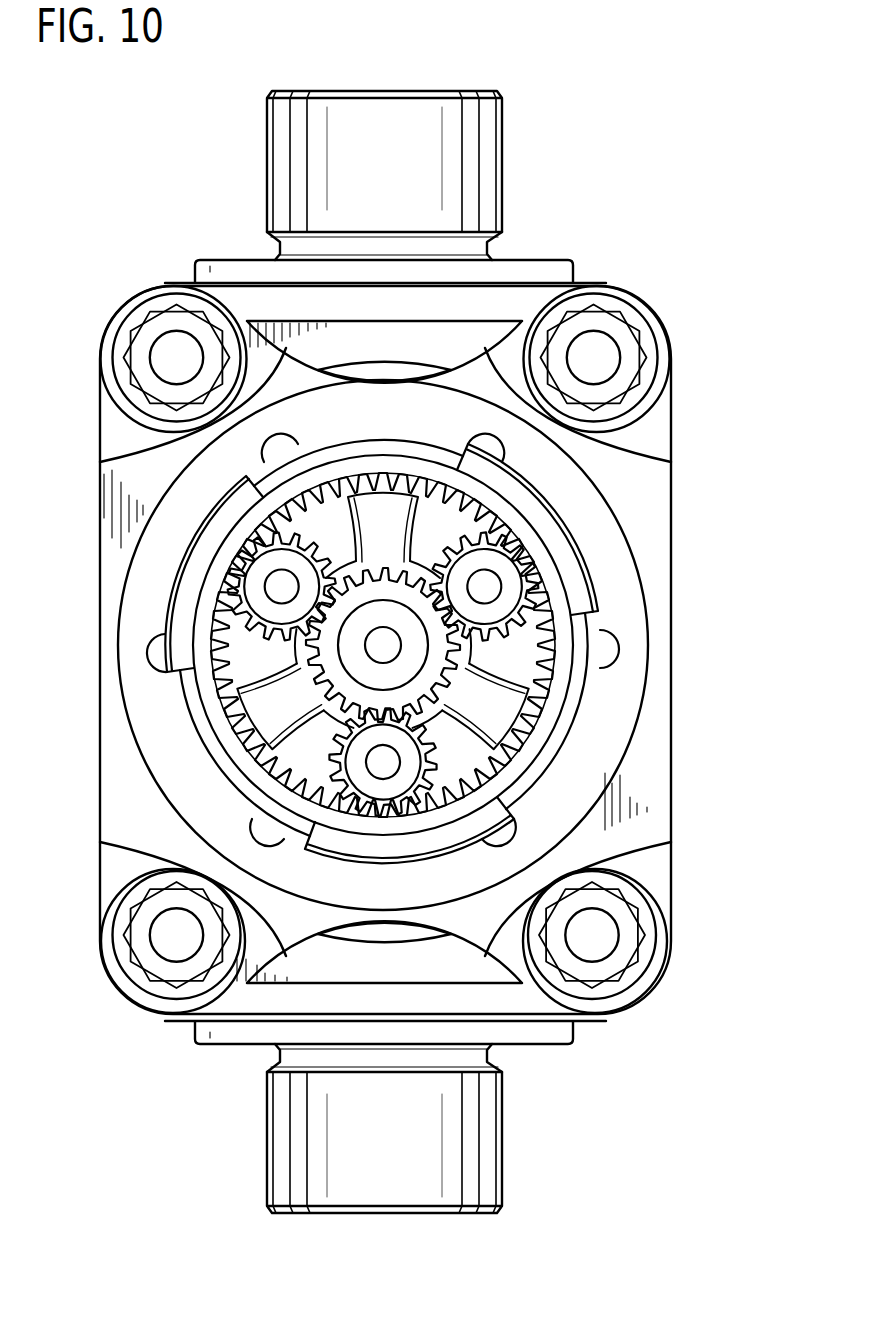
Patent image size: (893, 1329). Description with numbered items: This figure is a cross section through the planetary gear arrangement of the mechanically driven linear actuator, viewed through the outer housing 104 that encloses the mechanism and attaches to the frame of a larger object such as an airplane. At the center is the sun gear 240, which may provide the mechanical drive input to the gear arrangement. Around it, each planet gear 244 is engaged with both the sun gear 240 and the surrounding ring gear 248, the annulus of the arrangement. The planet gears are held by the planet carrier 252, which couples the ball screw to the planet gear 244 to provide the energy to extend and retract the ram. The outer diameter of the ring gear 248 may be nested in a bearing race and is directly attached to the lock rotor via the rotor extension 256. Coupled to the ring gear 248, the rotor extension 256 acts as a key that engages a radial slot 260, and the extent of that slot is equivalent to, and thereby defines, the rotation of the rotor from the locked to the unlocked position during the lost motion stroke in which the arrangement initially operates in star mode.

The outer housing 104 is at (605, 733).
The sun gear 240 is at (330, 688).
The planet gear 244 is at (510, 600).
The ring gear 248 is at (563, 697).
The planet carrier 252 is at (473, 758).
The rotor extension 256 is at (557, 533).
The radial slot 260 is at (222, 464).